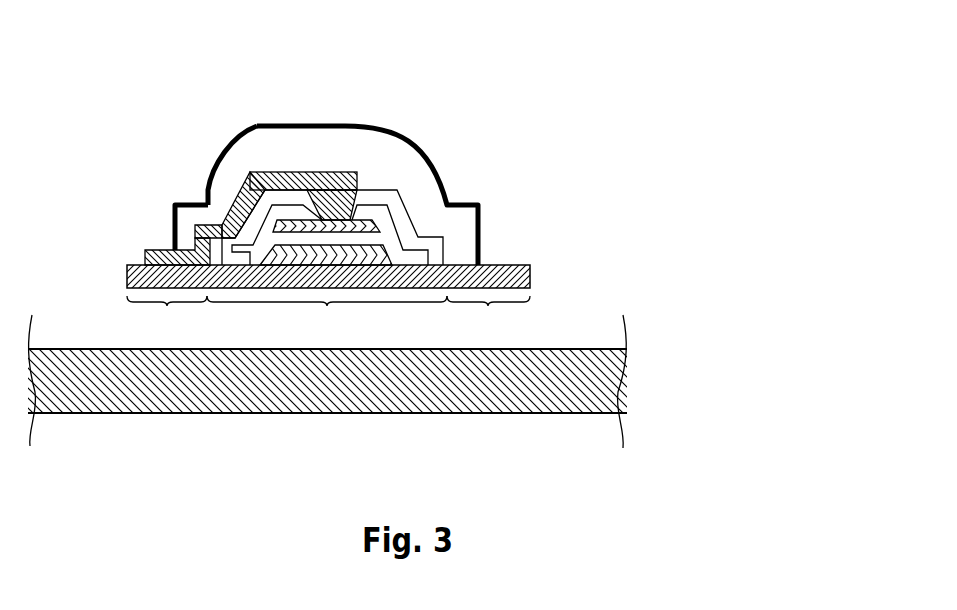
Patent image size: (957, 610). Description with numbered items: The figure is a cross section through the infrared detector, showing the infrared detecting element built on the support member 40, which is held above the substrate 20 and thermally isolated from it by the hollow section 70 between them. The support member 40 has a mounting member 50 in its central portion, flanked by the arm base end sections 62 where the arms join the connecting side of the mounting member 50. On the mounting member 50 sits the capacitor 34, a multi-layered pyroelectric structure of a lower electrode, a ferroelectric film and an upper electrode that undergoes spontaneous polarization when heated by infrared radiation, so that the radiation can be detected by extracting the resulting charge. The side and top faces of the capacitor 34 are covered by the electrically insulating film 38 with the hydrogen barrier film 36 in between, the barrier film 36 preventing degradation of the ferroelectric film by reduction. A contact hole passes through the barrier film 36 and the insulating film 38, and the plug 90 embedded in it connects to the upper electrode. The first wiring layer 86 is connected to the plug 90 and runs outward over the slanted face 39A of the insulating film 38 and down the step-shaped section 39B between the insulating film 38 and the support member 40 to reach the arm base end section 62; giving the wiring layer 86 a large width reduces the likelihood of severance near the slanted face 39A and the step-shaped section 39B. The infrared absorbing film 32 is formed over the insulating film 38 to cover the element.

The substrate 20 is at (442, 403).
The hollow section 70 is at (270, 330).
The support member 40 is at (530, 280).
The arm base end section 62 is at (328, 313).
The mounting member 50 is at (327, 313).
The capacitor 34 is at (388, 243).
The hydrogen barrier film 36 is at (387, 227).
The electrically insulating film 38 is at (393, 202).
The slanted face 39A is at (250, 213).
The step-shaped section 39B is at (191, 233).
The plug 90 is at (336, 200).
The first wiring layer 86 is at (247, 127).
The infrared absorbing film 32 is at (386, 143).